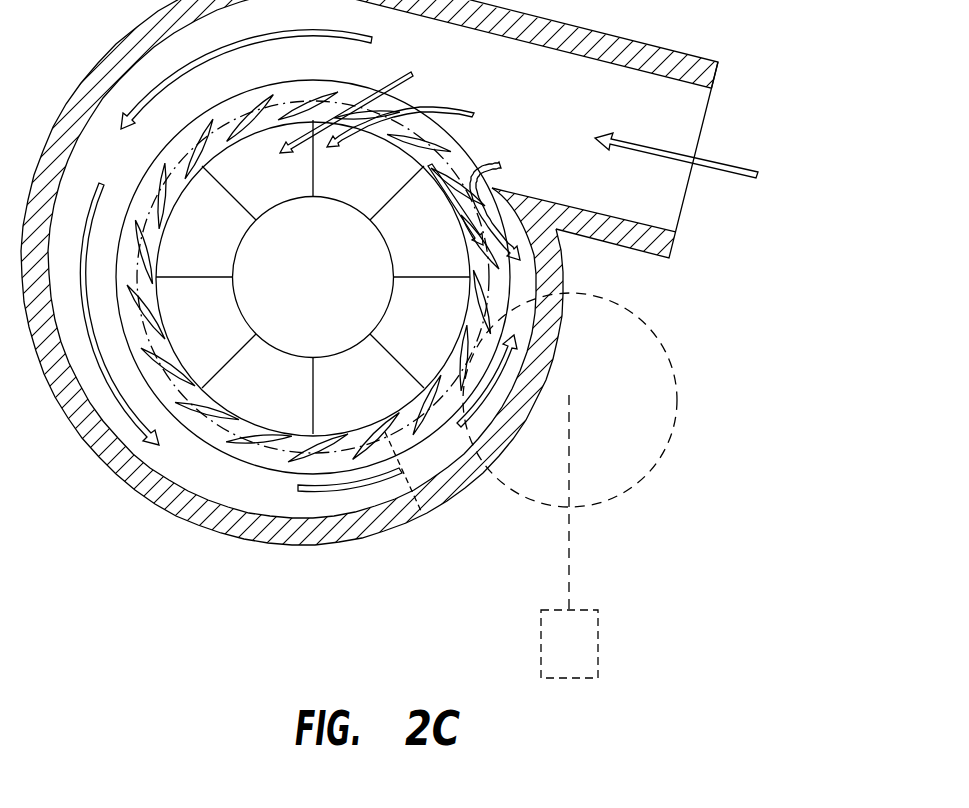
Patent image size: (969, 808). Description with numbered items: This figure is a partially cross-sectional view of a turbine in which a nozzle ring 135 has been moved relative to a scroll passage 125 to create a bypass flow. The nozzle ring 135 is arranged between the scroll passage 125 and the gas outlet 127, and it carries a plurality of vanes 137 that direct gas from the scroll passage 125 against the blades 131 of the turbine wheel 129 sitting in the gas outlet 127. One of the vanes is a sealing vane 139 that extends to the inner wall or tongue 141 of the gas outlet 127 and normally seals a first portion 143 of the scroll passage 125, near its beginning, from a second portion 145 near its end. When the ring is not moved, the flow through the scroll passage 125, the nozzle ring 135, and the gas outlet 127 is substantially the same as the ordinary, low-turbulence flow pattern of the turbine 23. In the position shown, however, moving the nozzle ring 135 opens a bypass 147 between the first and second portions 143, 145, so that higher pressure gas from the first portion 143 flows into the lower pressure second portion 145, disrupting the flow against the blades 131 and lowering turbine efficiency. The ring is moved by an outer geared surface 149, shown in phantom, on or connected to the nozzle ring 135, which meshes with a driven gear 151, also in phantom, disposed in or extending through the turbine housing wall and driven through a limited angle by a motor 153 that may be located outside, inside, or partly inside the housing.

The turbine 23 is at (214, 548).
The scroll passage 125 is at (672, 117).
The gas outlet 127 is at (270, 391).
The turbine wheel 129 is at (262, 297).
The blades 131 is at (220, 190).
The nozzle ring 135 is at (148, 185).
The vanes 137 is at (258, 108).
The sealing vane 139 is at (450, 148).
The tongue 141 is at (485, 200).
The first portion of the scroll passage 143 is at (665, 193).
The second portion of the scroll passage 145 is at (525, 290).
The bypass 147 is at (447, 153).
The outer geared surface 149 is at (423, 510).
The driven gear 151 is at (673, 443).
The motor 153 is at (600, 640).